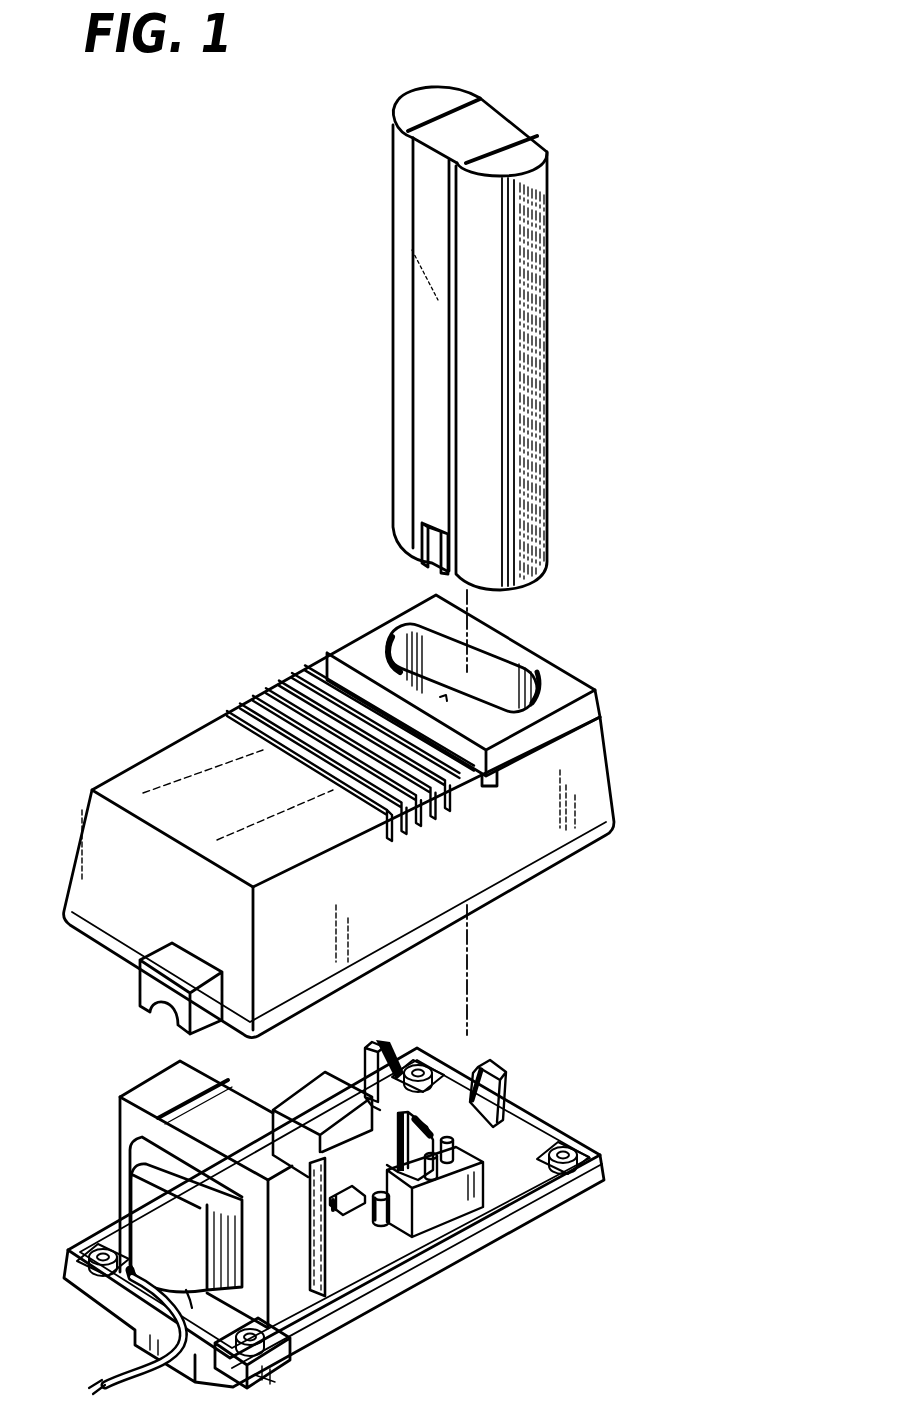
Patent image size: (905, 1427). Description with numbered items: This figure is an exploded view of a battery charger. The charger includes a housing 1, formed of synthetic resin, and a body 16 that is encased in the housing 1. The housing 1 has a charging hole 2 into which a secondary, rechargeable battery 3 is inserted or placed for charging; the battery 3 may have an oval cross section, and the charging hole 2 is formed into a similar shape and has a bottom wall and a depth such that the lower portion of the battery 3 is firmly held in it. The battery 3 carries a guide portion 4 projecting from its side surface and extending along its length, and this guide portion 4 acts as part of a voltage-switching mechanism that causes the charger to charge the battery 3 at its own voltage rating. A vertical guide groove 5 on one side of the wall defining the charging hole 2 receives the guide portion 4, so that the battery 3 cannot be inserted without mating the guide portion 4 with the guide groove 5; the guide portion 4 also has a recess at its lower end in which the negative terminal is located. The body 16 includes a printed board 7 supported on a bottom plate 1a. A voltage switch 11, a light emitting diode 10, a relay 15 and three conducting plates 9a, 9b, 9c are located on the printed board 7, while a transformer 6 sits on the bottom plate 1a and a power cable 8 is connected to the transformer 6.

The housing 1 is at (339, 804).
The bottom plate 1a is at (372, 1308).
The charging hole 2 is at (503, 676).
The rechargeable battery 3 is at (472, 338).
The guide portion 4 is at (432, 345).
The guide groove 5 is at (400, 636).
The transformer 6 is at (148, 1090).
The printed board 7 is at (517, 1177).
The power cable 8 is at (122, 1358).
The conducting plate 9a is at (506, 1073).
The conducting plate 9b is at (438, 1138).
The conducting plate 9c is at (378, 1047).
The light emitting diode 10 is at (390, 1228).
The voltage switch 11 is at (348, 1213).
The relay 15 is at (300, 1100).
The body 16 is at (477, 1032).